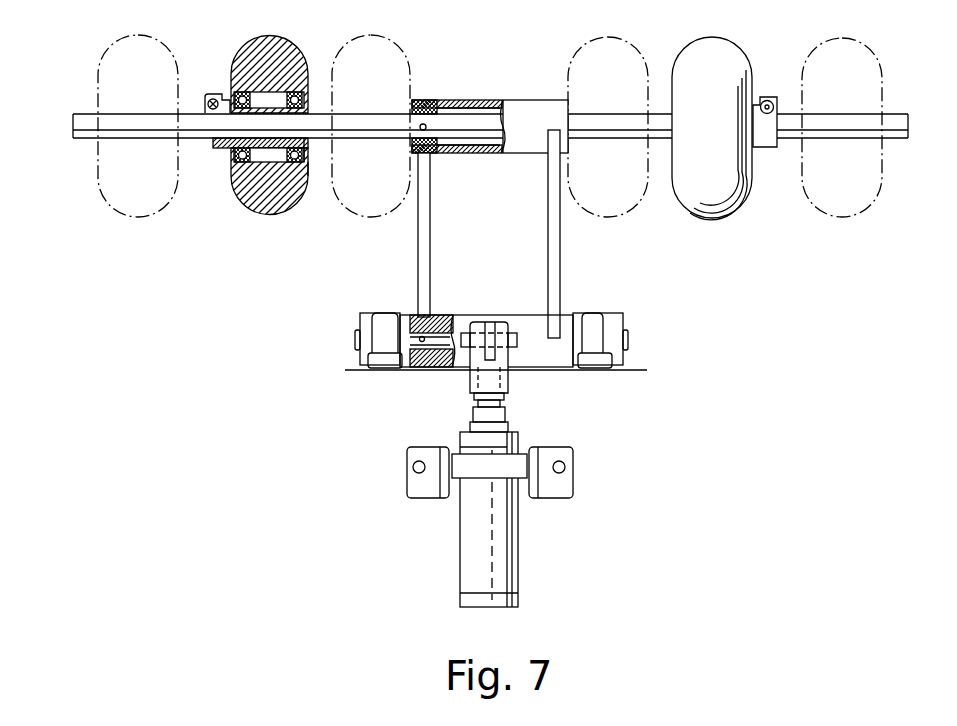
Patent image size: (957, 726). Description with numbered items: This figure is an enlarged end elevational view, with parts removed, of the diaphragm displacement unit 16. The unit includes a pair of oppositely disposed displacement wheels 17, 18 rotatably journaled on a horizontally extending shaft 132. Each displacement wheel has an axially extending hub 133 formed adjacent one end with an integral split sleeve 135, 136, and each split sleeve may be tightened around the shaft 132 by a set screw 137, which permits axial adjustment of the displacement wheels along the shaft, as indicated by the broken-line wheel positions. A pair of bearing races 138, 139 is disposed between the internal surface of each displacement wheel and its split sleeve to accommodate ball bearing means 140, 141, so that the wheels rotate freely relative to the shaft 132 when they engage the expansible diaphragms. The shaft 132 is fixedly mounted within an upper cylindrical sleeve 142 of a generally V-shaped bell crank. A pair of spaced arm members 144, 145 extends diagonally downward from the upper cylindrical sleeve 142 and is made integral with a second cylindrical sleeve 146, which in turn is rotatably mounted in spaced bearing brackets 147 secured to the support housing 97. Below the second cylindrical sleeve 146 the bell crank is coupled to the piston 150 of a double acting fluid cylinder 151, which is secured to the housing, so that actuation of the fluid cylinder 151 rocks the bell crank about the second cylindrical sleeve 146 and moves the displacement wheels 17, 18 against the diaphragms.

The diaphragm displacement unit 16 is at (577, 37).
The displacement wheel 17 is at (269, 115).
The displacement wheel 18 is at (720, 38).
The support housing 97 is at (641, 370).
The shaft 132 is at (903, 117).
The hub 133 is at (309, 147).
The split sleeve 135 is at (209, 96).
The split sleeve 136 is at (766, 97).
The set screw 137 is at (788, 99).
The bearing race 138 is at (232, 69).
The bearing race 139 is at (300, 91).
The ball bearing means 140 is at (233, 160).
The ball bearing means 141 is at (306, 186).
The upper cylindrical sleeve 142 is at (516, 100).
The arm member 144 is at (431, 284).
The arm member 145 is at (561, 284).
The second cylindrical sleeve 146 is at (463, 317).
The bearing bracket 147 is at (384, 314).
The piston 150 is at (506, 407).
The double acting fluid cylinder 151 is at (519, 568).